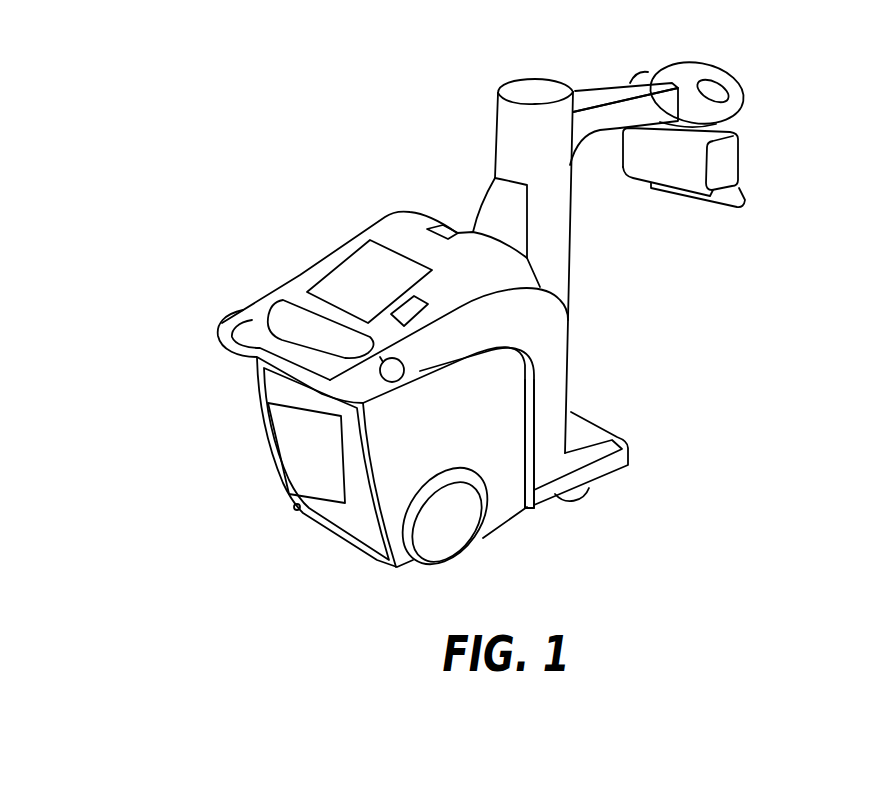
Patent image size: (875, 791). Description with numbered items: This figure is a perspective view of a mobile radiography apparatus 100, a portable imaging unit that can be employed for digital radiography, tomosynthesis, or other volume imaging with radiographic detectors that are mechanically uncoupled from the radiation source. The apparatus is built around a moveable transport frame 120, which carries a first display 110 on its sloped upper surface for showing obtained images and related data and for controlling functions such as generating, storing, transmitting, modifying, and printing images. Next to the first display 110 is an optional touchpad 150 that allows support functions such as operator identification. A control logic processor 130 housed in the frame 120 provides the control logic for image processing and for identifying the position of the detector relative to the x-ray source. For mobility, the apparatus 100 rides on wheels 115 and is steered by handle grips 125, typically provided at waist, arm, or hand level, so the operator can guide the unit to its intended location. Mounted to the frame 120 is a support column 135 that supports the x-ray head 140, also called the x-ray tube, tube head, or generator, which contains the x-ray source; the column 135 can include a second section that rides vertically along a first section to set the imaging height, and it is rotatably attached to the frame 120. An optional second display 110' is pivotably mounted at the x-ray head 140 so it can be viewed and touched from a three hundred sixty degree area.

The mobile radiography apparatus 100 is at (260, 128).
The first display 110 is at (342, 292).
The second display 110' is at (725, 167).
The wheels 115 is at (467, 553).
The moveable transport frame 120 is at (483, 408).
The handle grips 125 is at (235, 348).
The control logic processor 130 is at (310, 457).
The support column 135 is at (665, 47).
The x-ray head 140 is at (728, 82).
The touchpad 150 is at (407, 310).